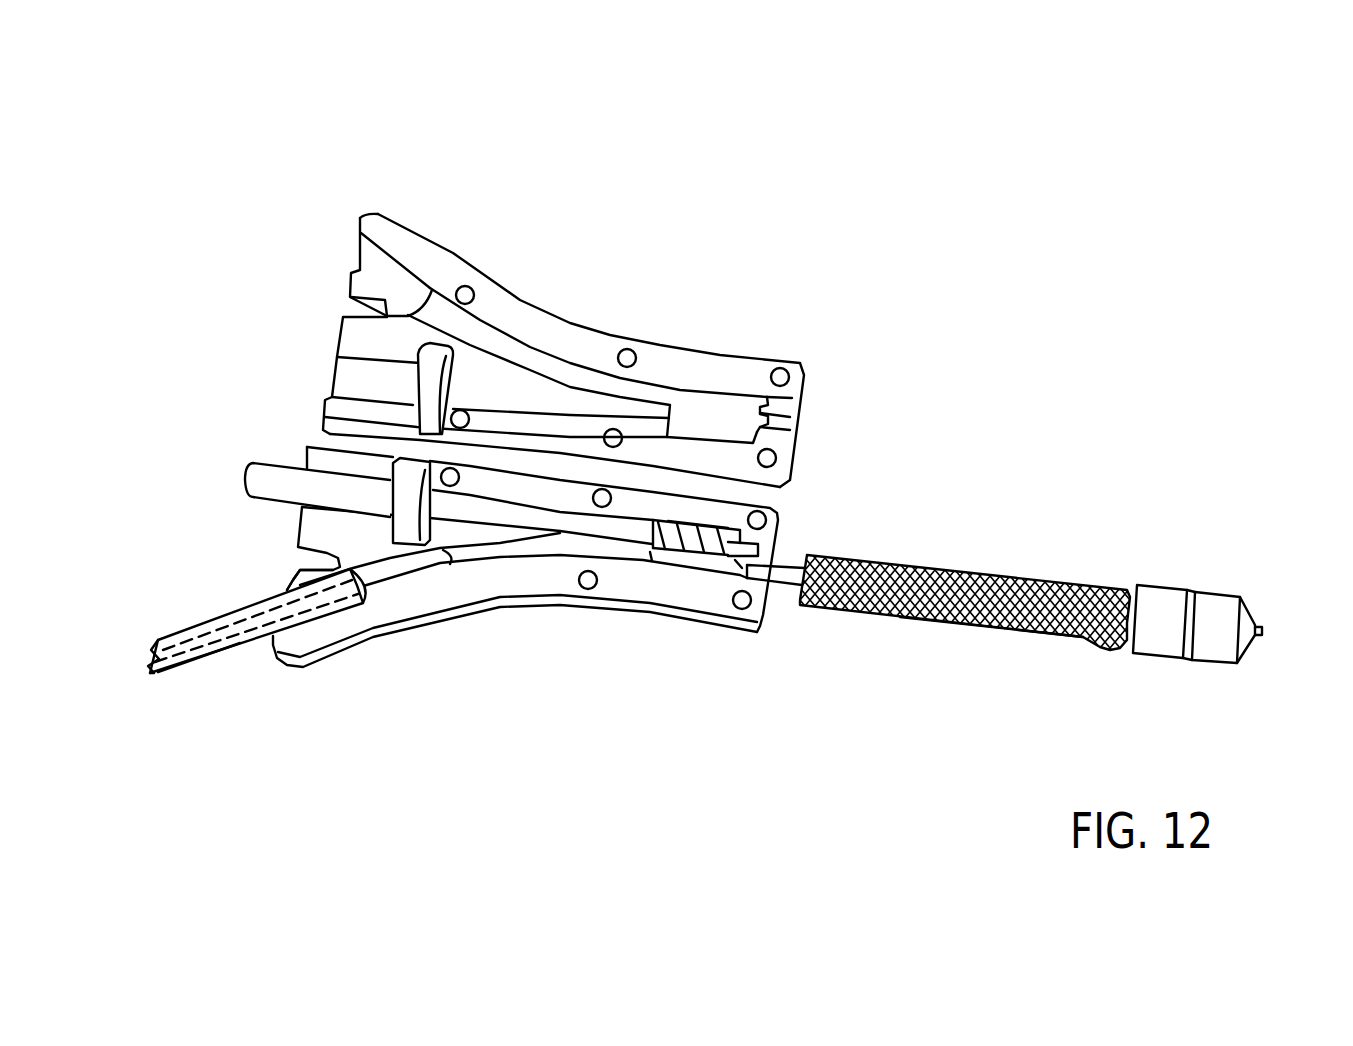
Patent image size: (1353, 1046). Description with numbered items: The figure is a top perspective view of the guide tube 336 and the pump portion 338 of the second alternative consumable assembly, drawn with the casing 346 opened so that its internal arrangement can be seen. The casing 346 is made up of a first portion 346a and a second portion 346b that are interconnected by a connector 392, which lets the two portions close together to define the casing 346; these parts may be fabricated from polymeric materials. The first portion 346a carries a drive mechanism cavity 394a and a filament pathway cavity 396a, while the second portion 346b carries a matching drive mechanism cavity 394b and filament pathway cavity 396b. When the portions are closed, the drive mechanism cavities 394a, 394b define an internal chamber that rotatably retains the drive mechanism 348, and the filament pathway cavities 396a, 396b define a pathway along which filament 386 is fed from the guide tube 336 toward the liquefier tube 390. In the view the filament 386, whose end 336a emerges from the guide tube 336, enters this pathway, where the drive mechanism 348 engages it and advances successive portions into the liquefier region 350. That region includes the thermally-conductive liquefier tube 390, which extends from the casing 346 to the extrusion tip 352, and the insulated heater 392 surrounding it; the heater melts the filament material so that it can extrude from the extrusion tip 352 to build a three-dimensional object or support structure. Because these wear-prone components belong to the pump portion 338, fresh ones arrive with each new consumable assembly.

The guide tube 336 is at (193, 663).
The tube end 336a is at (243, 667).
The pump portion 338 is at (741, 160).
The casing 346 is at (568, 318).
The first portion 346a is at (675, 360).
The second portion 346b is at (643, 590).
The drive mechanism 348 is at (277, 475).
The liquefier region 350 is at (911, 632).
The extrusion tip 352 is at (1215, 610).
The filament 386 is at (403, 568).
The liquefier tube 390 is at (778, 578).
The insulated heater 392 is at (988, 630).
The drive mechanism cavity 394a is at (337, 373).
The drive mechanism cavity 394b is at (296, 512).
The filament pathway cavity 396a is at (358, 247).
The filament pathway cavity 396b is at (280, 592).